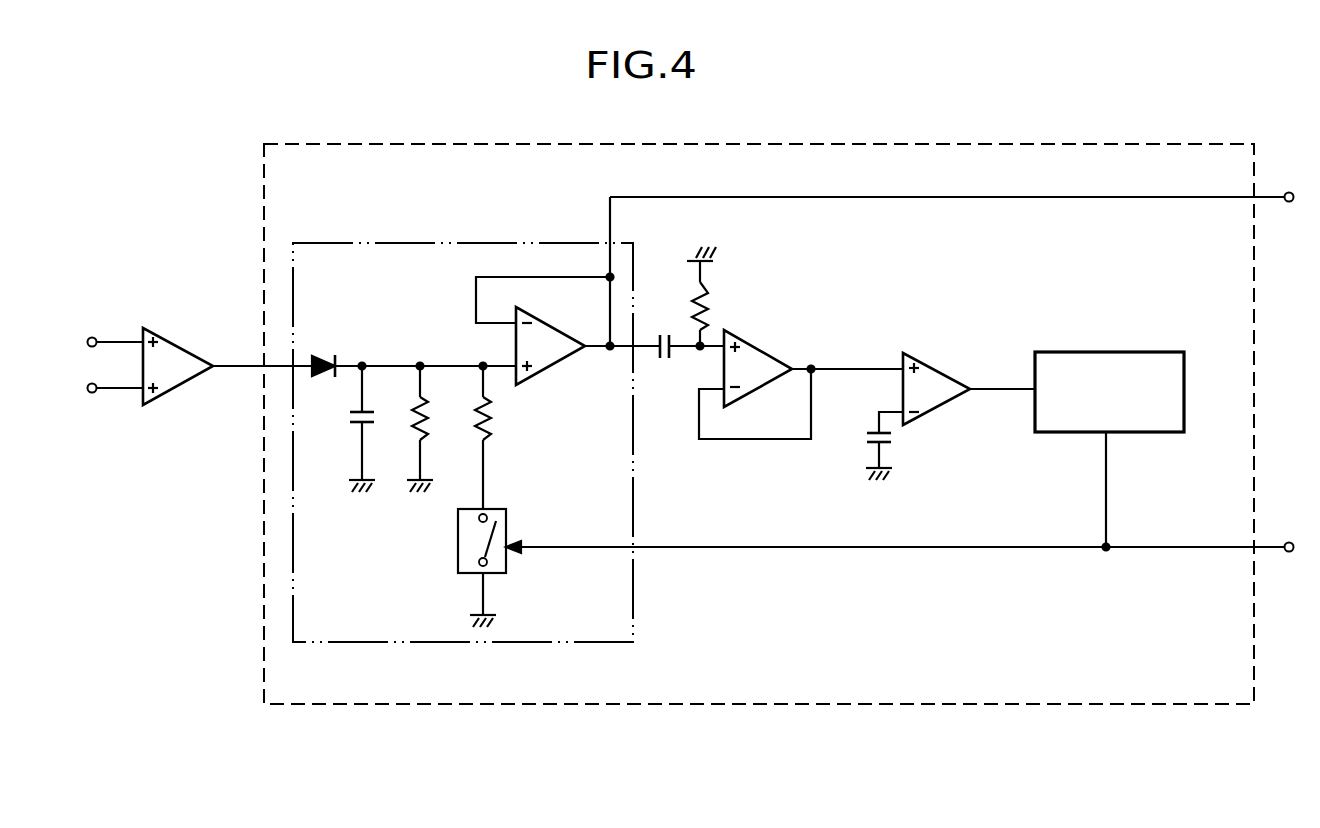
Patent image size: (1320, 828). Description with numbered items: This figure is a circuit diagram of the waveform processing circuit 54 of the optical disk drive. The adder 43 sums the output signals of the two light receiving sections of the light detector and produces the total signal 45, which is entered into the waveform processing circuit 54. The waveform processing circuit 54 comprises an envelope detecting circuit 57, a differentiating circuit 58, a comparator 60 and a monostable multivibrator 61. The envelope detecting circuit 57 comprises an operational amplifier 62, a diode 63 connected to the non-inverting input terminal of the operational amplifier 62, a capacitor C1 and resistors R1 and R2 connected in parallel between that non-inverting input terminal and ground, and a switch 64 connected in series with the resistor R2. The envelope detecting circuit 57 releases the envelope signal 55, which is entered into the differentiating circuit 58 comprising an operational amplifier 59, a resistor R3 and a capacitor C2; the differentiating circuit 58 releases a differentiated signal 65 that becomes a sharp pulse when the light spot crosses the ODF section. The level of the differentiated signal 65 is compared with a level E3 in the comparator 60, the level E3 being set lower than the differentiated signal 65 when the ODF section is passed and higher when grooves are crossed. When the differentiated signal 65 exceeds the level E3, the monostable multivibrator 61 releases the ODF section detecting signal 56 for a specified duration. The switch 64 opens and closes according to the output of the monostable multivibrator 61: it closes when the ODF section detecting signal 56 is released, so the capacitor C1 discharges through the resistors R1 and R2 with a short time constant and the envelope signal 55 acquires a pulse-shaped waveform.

The adder 43 is at (188, 350).
The total signal 45 is at (235, 367).
The diode 63 is at (320, 355).
The envelope detecting circuit 57 is at (400, 243).
The capacitor C1 is at (379, 429).
The resistor R1 is at (439, 429).
The resistor R2 is at (501, 437).
The switch 64 is at (508, 559).
The operational amplifier 62 is at (563, 358).
The capacitor C2 is at (682, 331).
The resistor R3 is at (717, 298).
The operational amplifier 59 is at (760, 350).
The differentiating circuit 58 is at (688, 396).
The differentiated signal 65 is at (858, 369).
The comparator 60 is at (937, 371).
The level E3 is at (864, 446).
The monostable multivibrator 61 is at (1125, 352).
The envelope signal 55 is at (1125, 197).
The ODF section detecting signal 56 is at (1152, 547).
The waveform processing circuit 54 is at (953, 145).